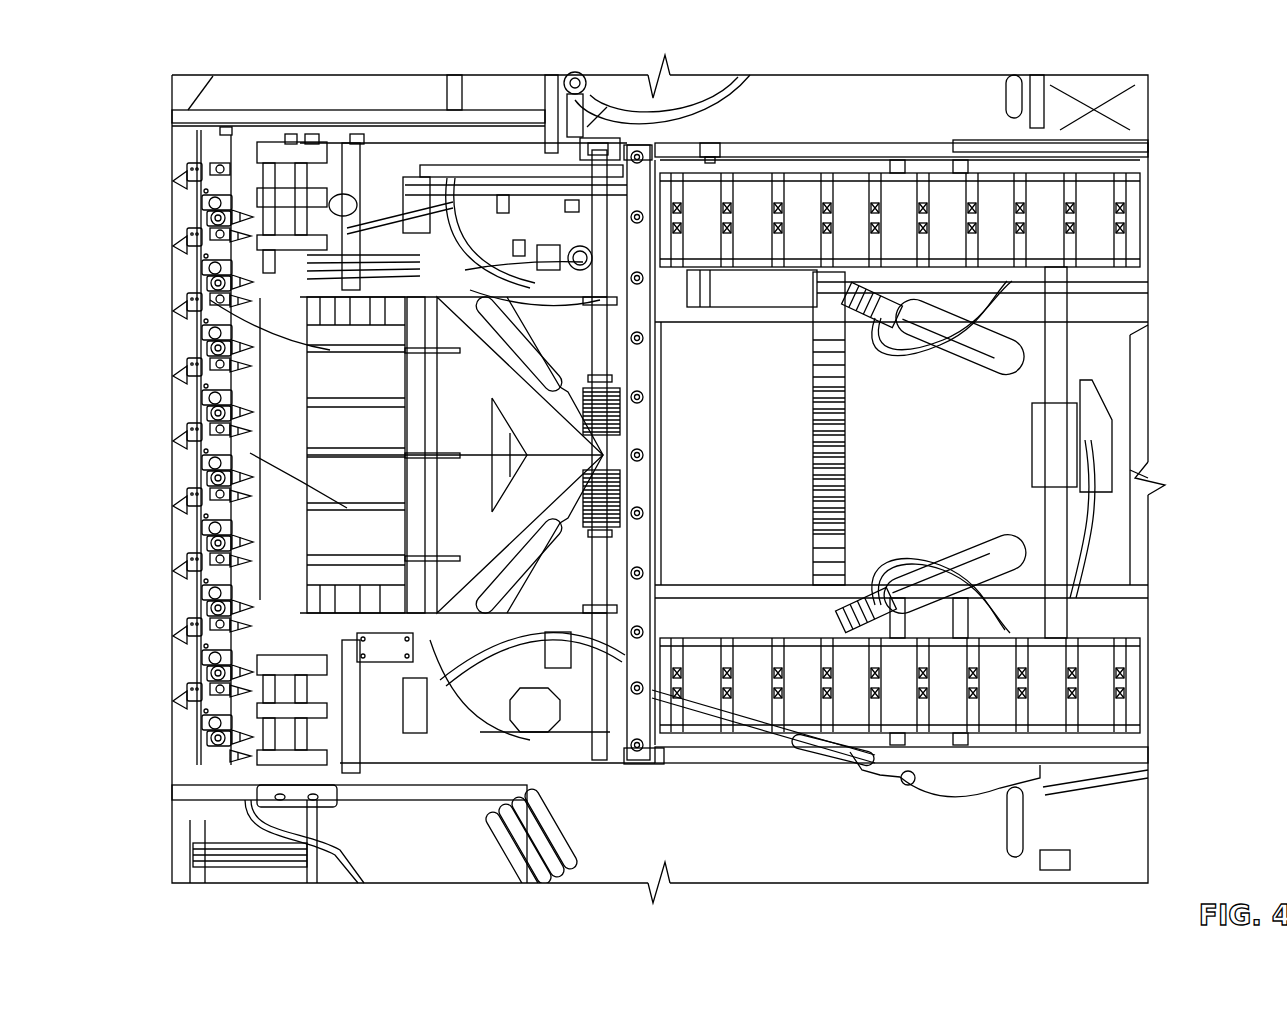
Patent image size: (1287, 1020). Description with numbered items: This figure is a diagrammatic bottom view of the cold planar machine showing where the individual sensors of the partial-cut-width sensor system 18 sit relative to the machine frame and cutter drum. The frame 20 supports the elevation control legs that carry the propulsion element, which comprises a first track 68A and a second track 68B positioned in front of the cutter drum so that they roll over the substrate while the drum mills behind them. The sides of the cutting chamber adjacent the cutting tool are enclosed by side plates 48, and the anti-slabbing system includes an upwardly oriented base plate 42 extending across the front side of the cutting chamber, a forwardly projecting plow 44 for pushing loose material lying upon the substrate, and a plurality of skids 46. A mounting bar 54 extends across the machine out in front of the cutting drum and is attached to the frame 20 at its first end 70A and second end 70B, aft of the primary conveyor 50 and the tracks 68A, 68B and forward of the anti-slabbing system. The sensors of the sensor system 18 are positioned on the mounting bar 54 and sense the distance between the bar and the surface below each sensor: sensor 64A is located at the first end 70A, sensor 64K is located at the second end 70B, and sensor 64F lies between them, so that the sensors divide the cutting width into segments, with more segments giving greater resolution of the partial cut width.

The partial-cut-width sensor system 18 is at (660, 165).
The frame 20 is at (763, 150).
The base plate 42 is at (207, 707).
The plow 44 is at (587, 437).
The skids 46 is at (172, 156).
The side plates 48 is at (300, 122).
The primary conveyor 50 is at (960, 398).
The mounting bar 54 is at (690, 279).
The sensor 64A is at (673, 760).
The sensor 64F is at (648, 455).
The sensor 64K is at (637, 148).
The first track 68A is at (1098, 222).
The second track 68B is at (1098, 688).
The first end 70A is at (640, 760).
The second end 70B is at (645, 152).